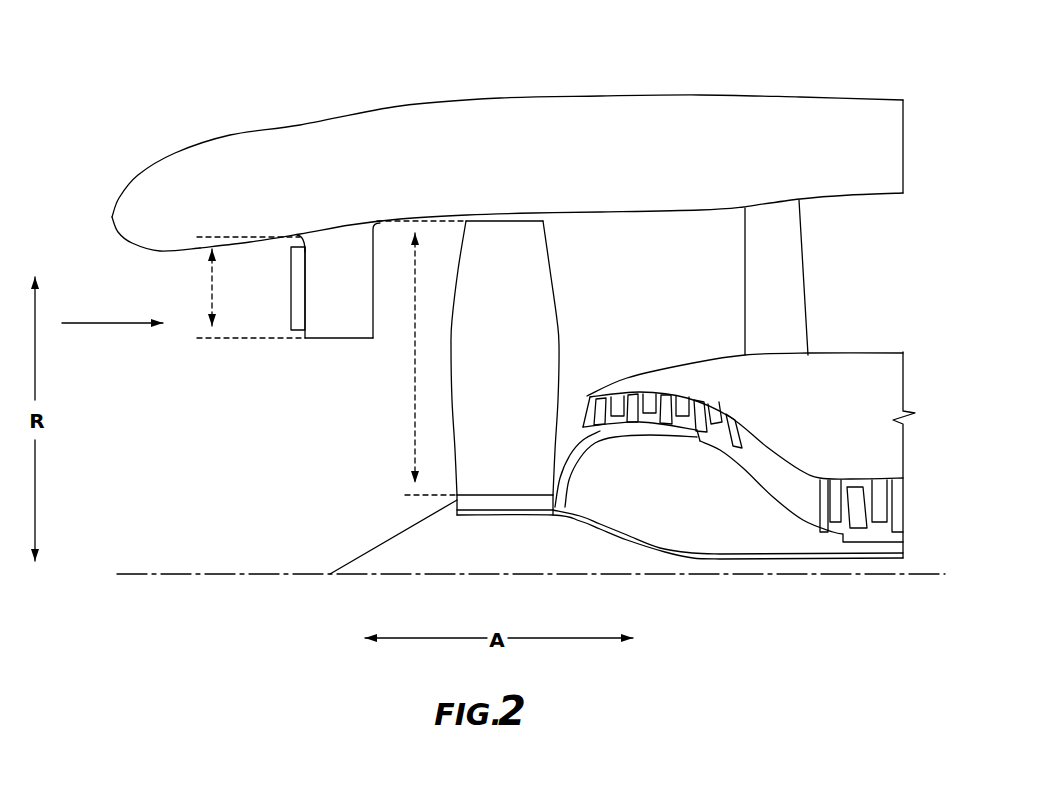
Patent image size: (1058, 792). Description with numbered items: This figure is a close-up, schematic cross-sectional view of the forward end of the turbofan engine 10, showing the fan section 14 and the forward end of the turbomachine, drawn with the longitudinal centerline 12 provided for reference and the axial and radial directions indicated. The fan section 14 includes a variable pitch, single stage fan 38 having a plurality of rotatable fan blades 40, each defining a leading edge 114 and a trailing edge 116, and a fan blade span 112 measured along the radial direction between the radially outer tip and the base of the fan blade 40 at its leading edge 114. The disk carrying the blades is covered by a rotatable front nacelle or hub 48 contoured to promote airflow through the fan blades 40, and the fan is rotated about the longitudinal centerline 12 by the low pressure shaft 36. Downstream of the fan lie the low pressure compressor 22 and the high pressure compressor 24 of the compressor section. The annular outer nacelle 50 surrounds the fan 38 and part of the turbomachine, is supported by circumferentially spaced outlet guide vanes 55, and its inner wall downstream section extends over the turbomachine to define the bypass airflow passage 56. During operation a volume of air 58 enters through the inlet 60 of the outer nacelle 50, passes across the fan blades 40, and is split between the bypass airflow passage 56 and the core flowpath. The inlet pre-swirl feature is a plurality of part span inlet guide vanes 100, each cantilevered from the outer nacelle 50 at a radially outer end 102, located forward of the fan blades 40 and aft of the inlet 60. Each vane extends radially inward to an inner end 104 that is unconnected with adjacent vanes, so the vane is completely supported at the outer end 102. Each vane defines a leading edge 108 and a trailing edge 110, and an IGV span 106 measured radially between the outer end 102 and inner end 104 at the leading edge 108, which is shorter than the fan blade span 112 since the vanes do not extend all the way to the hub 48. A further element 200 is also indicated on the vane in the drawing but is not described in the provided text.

The turbofan engine 10 is at (703, 62).
The longitudinal centerline 12 is at (197, 578).
The fan section 14 is at (474, 228).
The low pressure compressor 22 is at (722, 403).
The high pressure compressor 24 is at (855, 468).
The low pressure shaft 36 is at (737, 560).
The fan 38 is at (518, 195).
The fan blade 40 is at (541, 358).
The hub 48 is at (352, 560).
The outer nacelle 50 is at (498, 98).
The outlet guide vane 55 is at (795, 293).
The bypass airflow passage 56 is at (676, 302).
The volume of air 58 is at (122, 323).
The inlet 60 is at (108, 278).
The part span inlet guide vane 100 is at (330, 253).
The outer end 102 is at (356, 288).
The inner end 104 is at (343, 345).
The IGV span 106 is at (212, 295).
The leading edge 108 is at (280, 317).
The trailing edge 110 is at (375, 317).
The fan blade span 112 is at (410, 428).
The leading edge 114 is at (452, 342).
The trailing edge 116 is at (560, 317).
The sensor 200 is at (297, 243).